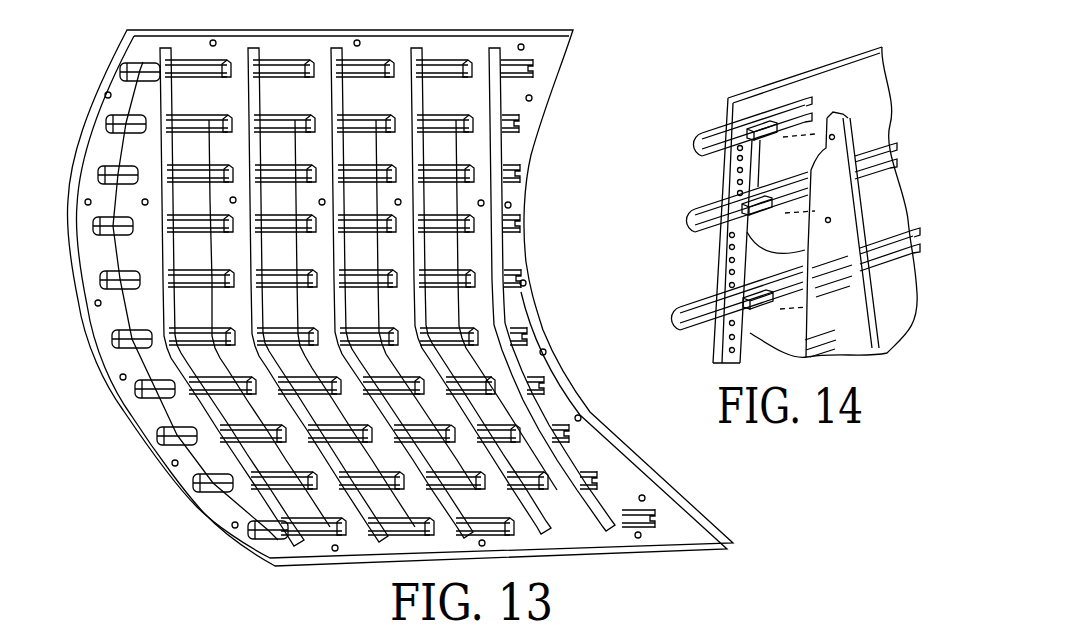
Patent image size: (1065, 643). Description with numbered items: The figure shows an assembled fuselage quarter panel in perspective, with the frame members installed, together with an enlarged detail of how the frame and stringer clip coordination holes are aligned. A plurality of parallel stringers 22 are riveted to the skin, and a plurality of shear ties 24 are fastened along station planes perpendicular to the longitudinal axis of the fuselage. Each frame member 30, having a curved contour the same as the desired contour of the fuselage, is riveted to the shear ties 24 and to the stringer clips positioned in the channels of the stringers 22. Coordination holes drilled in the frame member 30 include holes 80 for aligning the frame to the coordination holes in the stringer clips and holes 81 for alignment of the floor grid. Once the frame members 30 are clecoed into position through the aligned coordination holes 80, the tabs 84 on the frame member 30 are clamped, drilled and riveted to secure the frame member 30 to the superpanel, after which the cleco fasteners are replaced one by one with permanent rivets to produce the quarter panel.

In FIG. 13, the stringer 22 is at (443, 122).
In FIG. 13, the holes 81 is at (229, 200).
In FIG. 14, the holes 80 is at (815, 199).
In FIG. 14, the tabs 84 is at (823, 167).
In FIG. 14, the shear tie 24 is at (805, 252).
In FIG. 14, the frame member 30 is at (877, 283).